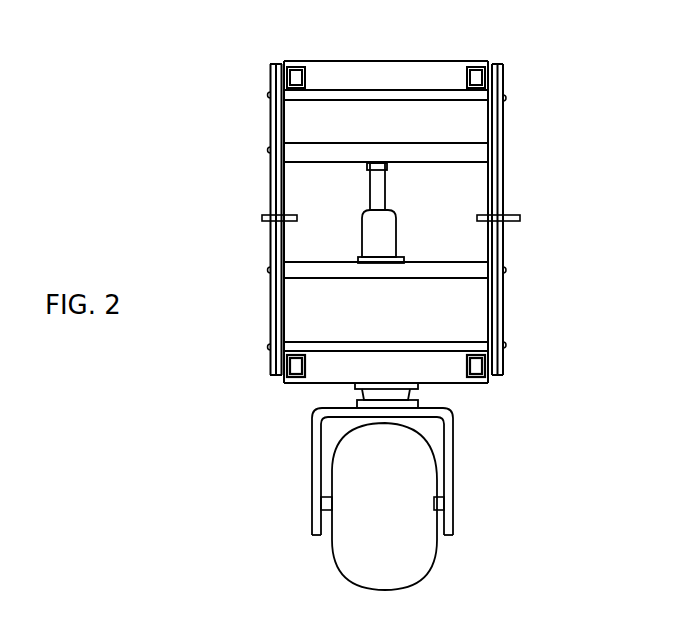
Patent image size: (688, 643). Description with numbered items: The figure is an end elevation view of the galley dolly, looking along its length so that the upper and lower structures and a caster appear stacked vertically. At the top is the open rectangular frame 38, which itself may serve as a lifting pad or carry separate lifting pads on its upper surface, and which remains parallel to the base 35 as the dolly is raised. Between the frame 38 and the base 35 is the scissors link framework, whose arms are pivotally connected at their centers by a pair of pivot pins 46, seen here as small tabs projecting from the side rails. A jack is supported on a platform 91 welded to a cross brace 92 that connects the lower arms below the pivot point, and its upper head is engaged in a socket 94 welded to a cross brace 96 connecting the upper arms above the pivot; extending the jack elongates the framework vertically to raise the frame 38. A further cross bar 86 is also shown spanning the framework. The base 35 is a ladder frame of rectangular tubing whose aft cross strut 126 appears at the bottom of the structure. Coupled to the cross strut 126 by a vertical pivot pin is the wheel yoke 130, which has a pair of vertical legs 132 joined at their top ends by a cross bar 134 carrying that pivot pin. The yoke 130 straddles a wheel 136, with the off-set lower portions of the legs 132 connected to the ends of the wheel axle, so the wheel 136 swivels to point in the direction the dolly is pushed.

The base 35 is at (272, 394).
The open rectangular frame 38 is at (383, 80).
The cross bar 86 is at (327, 97).
The cross brace 96 is at (460, 155).
The socket 94 is at (395, 168).
The platform 91 is at (400, 255).
The cross brace 92 is at (460, 268).
The pivot pins 46 is at (258, 222).
The aft cross strut 126 is at (445, 368).
The wheel yoke 130 is at (472, 456).
The cross bar 134 is at (335, 408).
The vertical legs 132 is at (450, 480).
The wheel 136 is at (403, 553).